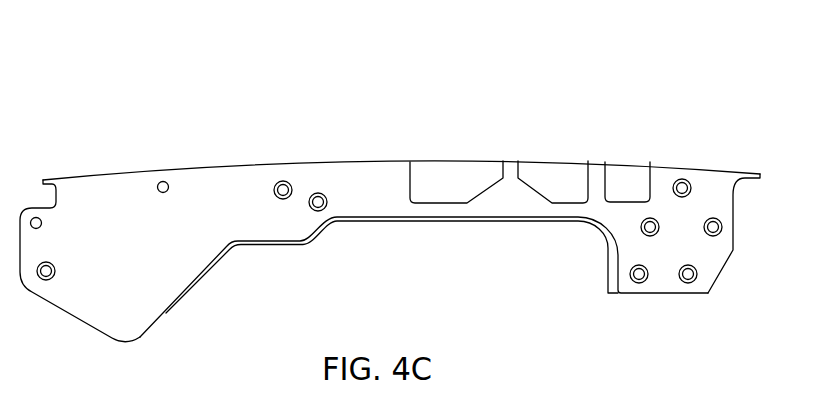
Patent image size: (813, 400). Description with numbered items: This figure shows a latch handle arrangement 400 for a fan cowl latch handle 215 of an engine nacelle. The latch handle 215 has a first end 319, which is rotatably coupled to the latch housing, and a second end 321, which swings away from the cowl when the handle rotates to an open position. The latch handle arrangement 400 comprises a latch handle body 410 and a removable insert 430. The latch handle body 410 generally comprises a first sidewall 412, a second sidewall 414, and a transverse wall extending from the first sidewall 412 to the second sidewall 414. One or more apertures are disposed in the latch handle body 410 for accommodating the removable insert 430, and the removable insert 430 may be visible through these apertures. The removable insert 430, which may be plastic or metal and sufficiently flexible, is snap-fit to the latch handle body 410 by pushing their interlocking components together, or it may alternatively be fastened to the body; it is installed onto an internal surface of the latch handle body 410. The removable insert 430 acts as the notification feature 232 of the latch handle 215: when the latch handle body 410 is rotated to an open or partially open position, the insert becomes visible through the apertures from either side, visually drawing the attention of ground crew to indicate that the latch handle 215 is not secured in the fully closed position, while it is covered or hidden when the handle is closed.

The latch handle arrangement 400 is at (306, 87).
The first end 319 is at (63, 145).
The second end 321 is at (755, 138).
The latch handle 215 is at (235, 172).
The latch handle body 410 is at (374, 163).
The notification feature 232 is at (453, 172).
The removable insert 430 is at (545, 177).
The first sidewall 412 is at (193, 287).
The second sidewall 414 is at (170, 307).